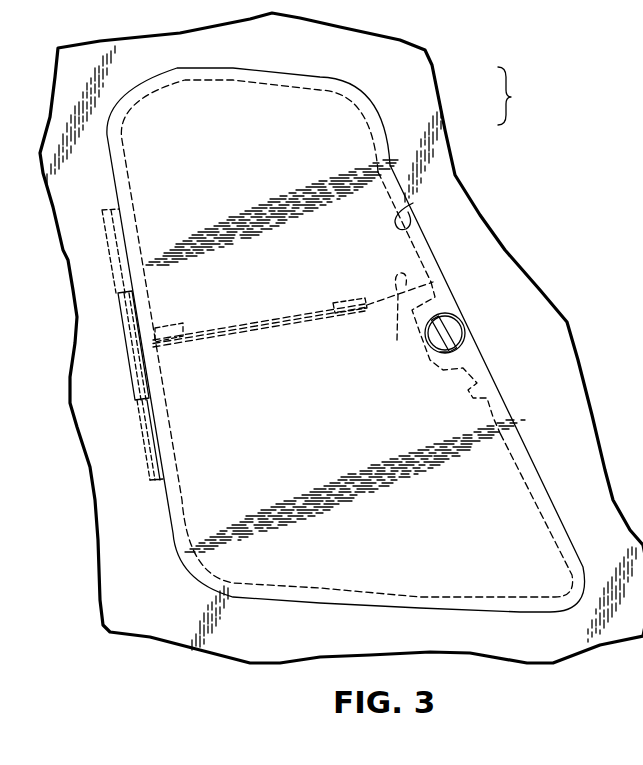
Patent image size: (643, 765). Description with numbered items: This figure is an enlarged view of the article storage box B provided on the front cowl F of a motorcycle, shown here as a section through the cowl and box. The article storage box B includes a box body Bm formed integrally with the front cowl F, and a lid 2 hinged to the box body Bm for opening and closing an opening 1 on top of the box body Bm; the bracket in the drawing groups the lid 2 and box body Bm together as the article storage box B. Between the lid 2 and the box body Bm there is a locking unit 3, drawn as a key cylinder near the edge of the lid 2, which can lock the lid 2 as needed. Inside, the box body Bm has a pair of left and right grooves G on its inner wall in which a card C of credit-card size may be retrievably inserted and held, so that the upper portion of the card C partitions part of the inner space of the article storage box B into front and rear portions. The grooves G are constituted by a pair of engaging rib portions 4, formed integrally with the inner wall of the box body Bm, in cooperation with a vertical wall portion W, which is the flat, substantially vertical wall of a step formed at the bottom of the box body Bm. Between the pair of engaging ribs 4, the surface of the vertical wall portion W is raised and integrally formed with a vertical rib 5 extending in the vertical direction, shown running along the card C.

The opening 1 is at (487, 398).
The lid 2 is at (370, 117).
The locking unit 3 is at (453, 325).
The engaging rib portion 4 is at (267, 28).
The vertical rib 5 is at (263, 318).
The article storage box B is at (512, 96).
The box body Bm is at (413, 203).
The card C is at (293, 305).
The front cowl F is at (528, 305).
The groove G is at (360, 303).
The vertical wall portion W is at (397, 319).